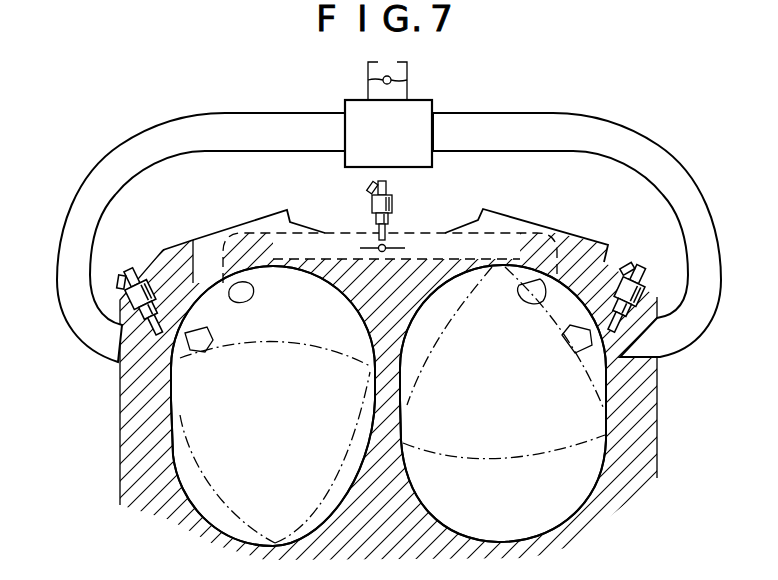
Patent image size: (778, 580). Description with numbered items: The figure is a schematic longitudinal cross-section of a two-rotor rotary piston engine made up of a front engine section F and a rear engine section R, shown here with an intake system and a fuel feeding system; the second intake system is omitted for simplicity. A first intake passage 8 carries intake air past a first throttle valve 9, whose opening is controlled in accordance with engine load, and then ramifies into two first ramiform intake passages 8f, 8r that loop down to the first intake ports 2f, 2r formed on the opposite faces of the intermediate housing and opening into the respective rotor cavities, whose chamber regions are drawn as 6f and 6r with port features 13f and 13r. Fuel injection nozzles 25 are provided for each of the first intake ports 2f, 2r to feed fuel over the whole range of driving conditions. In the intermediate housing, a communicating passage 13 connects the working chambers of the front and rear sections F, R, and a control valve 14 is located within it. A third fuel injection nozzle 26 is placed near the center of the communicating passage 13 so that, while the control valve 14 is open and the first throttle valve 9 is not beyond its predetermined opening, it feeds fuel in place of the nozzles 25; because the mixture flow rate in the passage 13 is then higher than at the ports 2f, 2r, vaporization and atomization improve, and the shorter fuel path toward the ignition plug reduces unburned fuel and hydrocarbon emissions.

The first intake passage 8 is at (409, 63).
The first ramiform intake passage 8f is at (130, 143).
The first ramiform intake passage 8r is at (657, 143).
The first throttle valve 9 is at (368, 79).
The communicating passage 13 is at (398, 262).
The front intake valve port 13f is at (253, 293).
The rear intake valve port 13r is at (527, 304).
The control valve 14 is at (398, 247).
The fuel injection nozzle 25 is at (150, 265).
The third fuel injection nozzle 26 is at (373, 200).
The first intake port 2f is at (210, 348).
The first intake port 2r is at (572, 350).
The front combustion chamber 6f is at (340, 472).
The rear combustion chamber 6r is at (488, 463).
The front engine section F is at (202, 534).
The rear engine section R is at (599, 496).